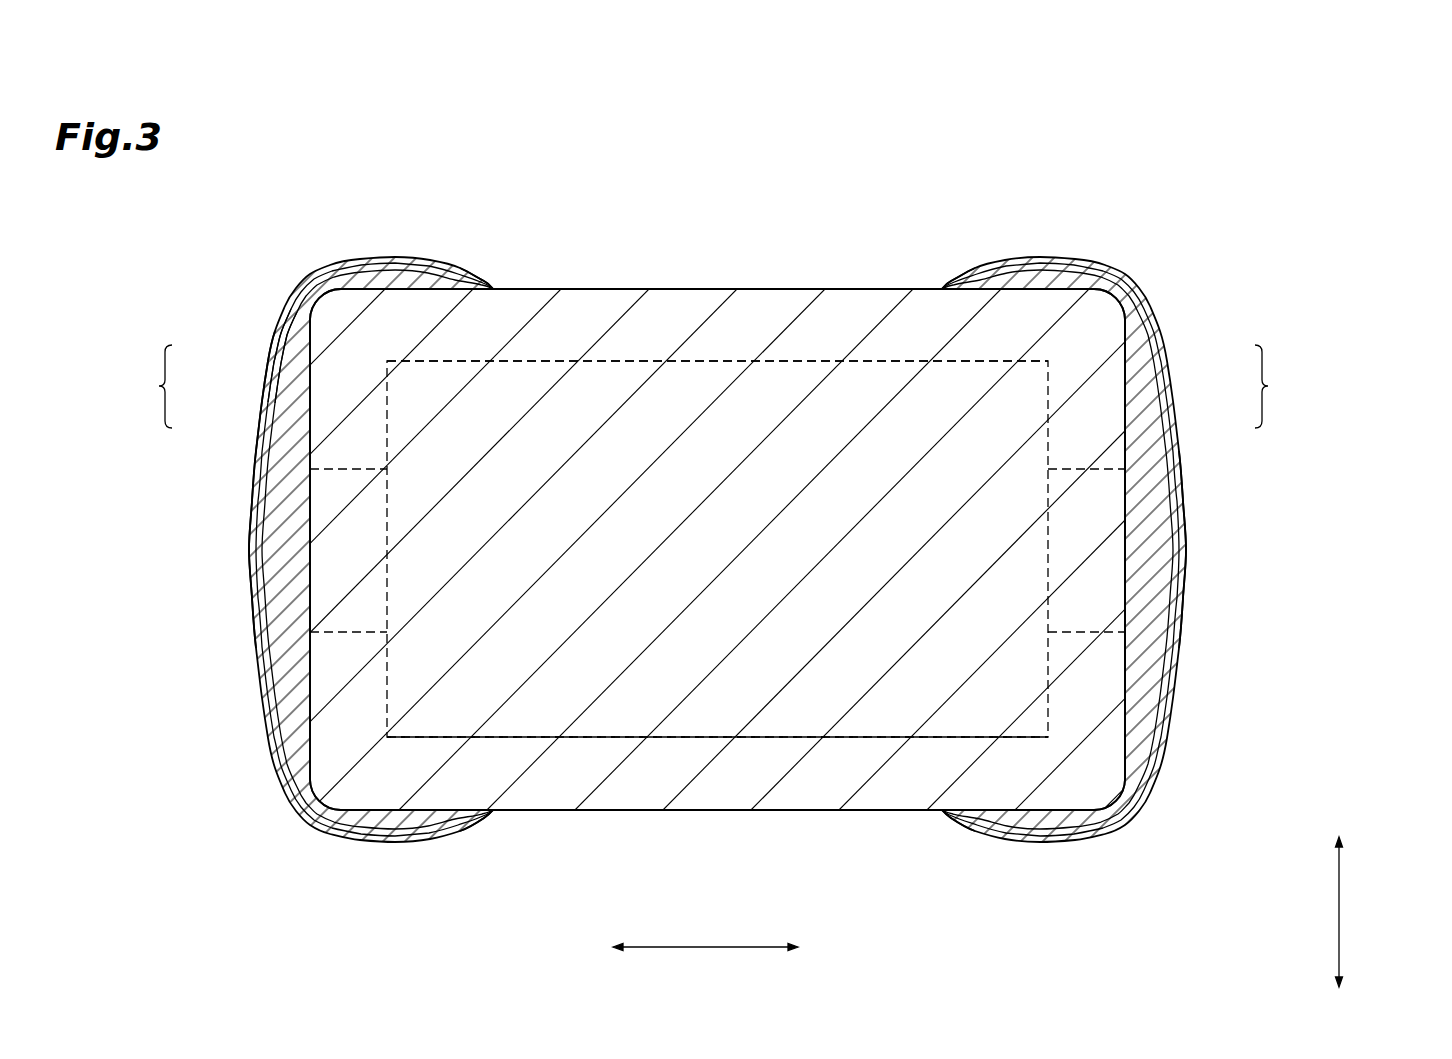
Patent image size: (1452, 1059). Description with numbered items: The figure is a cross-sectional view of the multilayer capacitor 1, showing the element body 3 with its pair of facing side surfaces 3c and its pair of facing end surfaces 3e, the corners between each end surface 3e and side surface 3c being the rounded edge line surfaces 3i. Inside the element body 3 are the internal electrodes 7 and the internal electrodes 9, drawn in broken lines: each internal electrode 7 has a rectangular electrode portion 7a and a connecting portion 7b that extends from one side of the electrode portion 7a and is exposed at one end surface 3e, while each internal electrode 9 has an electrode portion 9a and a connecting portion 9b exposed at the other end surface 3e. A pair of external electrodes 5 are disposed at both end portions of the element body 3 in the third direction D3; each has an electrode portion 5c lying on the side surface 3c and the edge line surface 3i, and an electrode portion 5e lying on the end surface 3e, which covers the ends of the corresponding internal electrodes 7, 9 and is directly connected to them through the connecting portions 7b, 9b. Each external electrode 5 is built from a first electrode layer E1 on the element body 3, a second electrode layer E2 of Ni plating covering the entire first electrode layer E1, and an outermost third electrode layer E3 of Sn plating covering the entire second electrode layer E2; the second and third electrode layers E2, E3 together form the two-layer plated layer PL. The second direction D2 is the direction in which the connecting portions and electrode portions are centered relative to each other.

The multilayer capacitor 1 is at (1188, 197).
The element body 3 is at (850, 282).
The side surface 3c is at (600, 289).
The end surface 3e is at (310, 566).
The edge line surface 3i is at (297, 283).
The external electrode 5 is at (286, 294).
The electrode portion 5c is at (357, 258).
The electrode portion 5e is at (246, 537).
The internal electrode 7 is at (780, 350).
The electrode portion 7a is at (718, 358).
The connecting portion 7b is at (360, 631).
The internal electrode 9 is at (699, 745).
The electrode portion 9a is at (797, 740).
The connecting portion 9b is at (1125, 632).
The first electrode layer E1 is at (296, 655).
The second electrode layer E2 is at (263, 397).
The third electrode layer E3 is at (268, 357).
The plated layer PL is at (711, 386).
The second direction D2 is at (1340, 922).
The third direction D3 is at (712, 950).